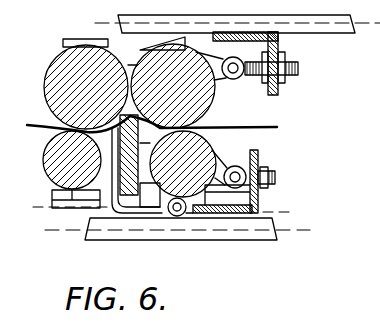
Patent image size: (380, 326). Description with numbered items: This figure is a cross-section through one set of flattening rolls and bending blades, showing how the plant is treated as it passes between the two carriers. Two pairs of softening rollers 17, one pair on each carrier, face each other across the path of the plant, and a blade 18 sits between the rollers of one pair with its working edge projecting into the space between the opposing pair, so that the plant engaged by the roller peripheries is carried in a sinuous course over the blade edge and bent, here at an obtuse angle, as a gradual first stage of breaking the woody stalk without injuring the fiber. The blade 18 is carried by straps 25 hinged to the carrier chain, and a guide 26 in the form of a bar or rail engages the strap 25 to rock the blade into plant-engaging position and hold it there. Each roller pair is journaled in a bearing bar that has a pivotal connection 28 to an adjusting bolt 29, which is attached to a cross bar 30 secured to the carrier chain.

The softening rollers 17 is at (58, 68).
The blades 18 is at (128, 190).
The straps 25 is at (160, 216).
The guide 26 is at (262, 238).
The pivotal connection 28 is at (238, 73).
The adjusting bolt 29 is at (298, 72).
The cross bar 30 is at (279, 43).